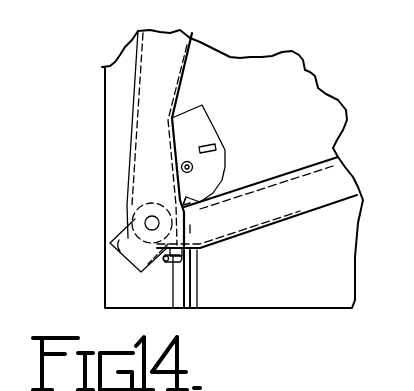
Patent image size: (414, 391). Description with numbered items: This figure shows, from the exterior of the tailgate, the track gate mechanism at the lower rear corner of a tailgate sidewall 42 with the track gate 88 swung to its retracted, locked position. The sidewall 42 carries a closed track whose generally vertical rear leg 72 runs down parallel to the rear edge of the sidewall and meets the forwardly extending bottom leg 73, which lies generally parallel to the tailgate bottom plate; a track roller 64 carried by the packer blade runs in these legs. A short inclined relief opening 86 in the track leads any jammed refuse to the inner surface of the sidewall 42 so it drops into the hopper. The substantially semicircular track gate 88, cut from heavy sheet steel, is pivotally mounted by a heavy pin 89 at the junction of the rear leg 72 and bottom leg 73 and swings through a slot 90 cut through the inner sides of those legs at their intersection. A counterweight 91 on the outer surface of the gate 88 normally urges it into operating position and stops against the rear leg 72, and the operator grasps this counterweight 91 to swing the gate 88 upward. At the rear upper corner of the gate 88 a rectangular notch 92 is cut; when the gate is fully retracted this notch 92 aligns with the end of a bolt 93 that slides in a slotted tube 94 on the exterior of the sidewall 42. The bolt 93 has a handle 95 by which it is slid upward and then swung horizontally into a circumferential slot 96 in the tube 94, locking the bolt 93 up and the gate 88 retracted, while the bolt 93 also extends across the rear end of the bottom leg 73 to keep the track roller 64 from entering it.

The sidewall 42 is at (259, 87).
The rear leg 72 is at (127, 163).
The track gate 88 is at (208, 130).
The counterweight 91 is at (210, 147).
The pin 89 is at (193, 166).
The slot 90 is at (248, 189).
The notch 92 is at (188, 199).
The bolt 93 is at (190, 233).
The bottom leg 73 is at (268, 225).
The track roller 64 is at (133, 212).
The relief opening 86 is at (115, 257).
The circumferential slot 96 is at (193, 273).
The handle 95 is at (167, 258).
The slotted tube 94 is at (176, 301).